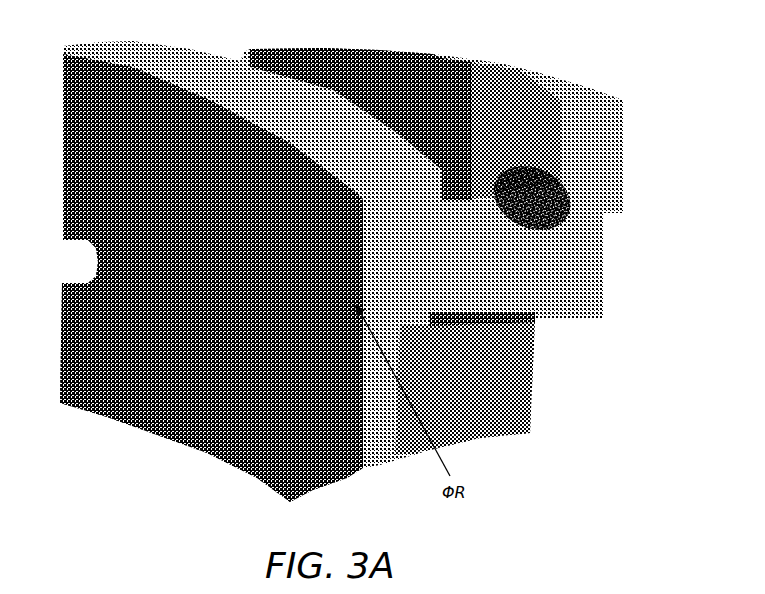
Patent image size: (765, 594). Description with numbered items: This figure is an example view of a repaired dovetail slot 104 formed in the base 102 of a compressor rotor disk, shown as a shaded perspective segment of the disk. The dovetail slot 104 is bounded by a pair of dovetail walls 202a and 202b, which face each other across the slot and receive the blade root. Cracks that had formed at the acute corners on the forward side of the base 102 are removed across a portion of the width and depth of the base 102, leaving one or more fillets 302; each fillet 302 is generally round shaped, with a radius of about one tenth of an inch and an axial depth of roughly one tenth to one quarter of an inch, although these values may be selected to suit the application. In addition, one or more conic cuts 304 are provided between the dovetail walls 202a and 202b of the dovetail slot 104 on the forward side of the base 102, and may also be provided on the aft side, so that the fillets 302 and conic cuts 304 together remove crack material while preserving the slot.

The base 102 is at (489, 250).
The dovetail slot 104 is at (236, 50).
The dovetail wall 202a is at (443, 173).
The dovetail wall 202b is at (341, 97).
The fillet 302 is at (568, 218).
The conic cut 304 is at (487, 302).